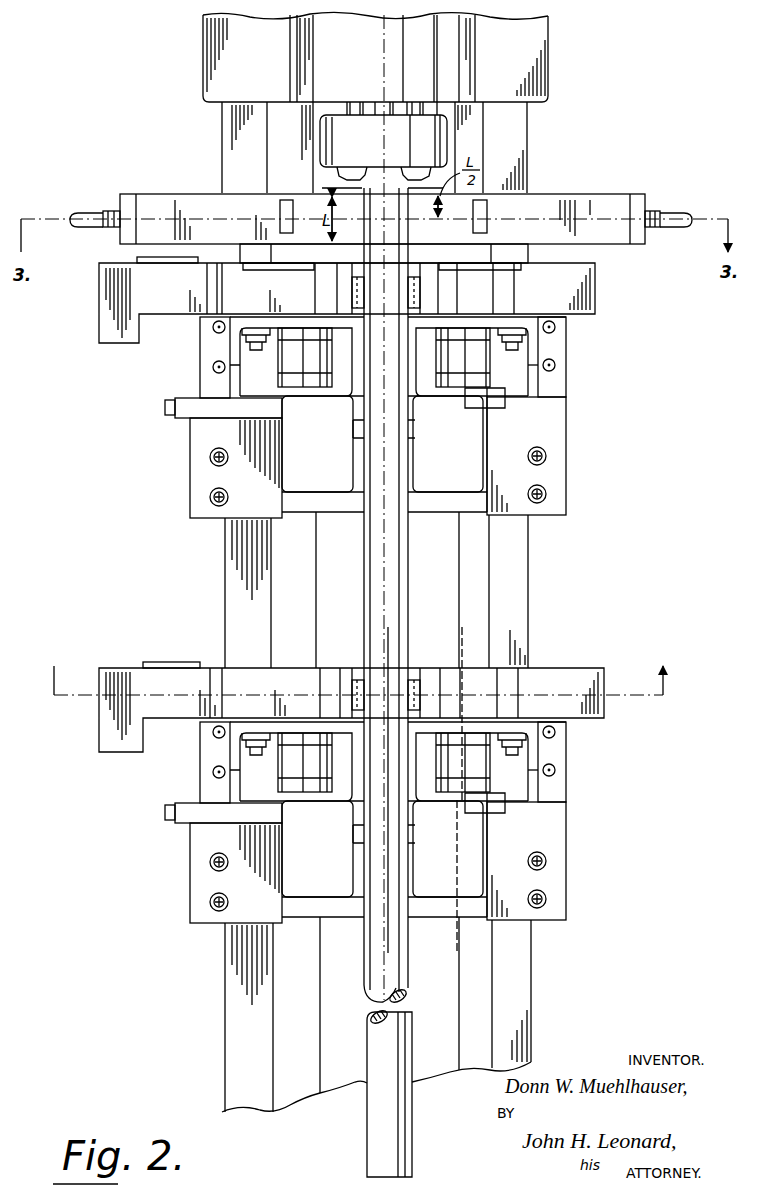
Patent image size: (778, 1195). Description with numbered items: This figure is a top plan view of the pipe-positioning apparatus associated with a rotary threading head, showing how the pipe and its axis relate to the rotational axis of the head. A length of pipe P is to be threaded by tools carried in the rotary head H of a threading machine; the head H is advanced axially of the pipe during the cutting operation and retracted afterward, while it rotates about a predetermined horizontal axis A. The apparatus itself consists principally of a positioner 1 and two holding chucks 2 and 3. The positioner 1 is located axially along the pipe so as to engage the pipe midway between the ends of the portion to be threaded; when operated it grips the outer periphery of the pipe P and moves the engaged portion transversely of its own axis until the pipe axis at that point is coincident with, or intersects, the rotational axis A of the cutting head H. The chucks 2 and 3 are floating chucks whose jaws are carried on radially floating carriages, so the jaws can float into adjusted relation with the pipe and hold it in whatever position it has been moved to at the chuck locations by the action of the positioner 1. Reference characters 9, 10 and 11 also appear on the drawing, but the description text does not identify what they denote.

The predetermined horizontal axis A is at (384, 60).
The rotary head H is at (447, 140).
The positioner 1 is at (593, 191).
The holding chuck 2 is at (598, 283).
The holding chuck 3 is at (606, 719).
The section line 9- 9 is at (358, 668).
The inner rod 10 is at (388, 627).
The guide rod 11 is at (460, 627).
The pipe P is at (380, 1127).